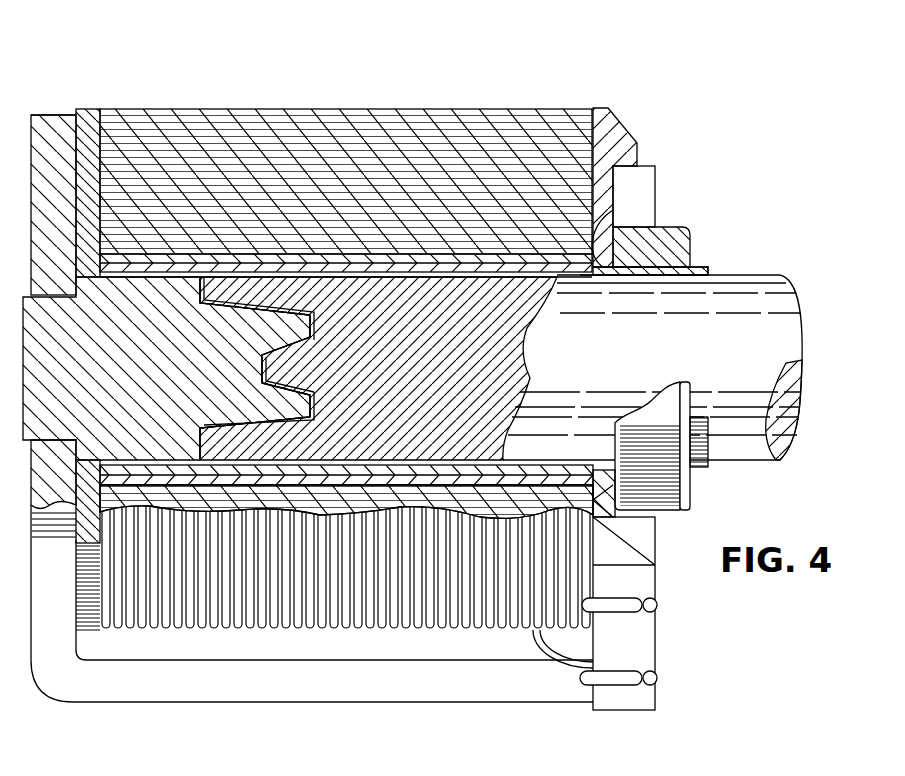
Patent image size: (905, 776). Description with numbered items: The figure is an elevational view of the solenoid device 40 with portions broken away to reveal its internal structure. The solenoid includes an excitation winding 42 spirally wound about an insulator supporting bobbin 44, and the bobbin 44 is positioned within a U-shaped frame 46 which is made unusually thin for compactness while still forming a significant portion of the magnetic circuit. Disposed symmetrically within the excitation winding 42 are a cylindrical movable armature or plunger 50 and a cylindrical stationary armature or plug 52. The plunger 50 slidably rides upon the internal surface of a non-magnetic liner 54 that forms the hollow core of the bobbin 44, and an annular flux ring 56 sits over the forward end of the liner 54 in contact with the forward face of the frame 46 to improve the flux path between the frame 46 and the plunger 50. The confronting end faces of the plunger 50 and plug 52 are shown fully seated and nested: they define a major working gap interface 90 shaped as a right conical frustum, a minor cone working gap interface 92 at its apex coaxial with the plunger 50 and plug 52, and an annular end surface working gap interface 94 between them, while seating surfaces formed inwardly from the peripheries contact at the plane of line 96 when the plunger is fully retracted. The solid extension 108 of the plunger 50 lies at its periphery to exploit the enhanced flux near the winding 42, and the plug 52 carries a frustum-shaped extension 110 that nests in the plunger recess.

The solenoid device 40 is at (535, 89).
The excitation winding 42 is at (182, 118).
The insulator supporting bobbin 44 is at (85, 113).
The U-shaped frame 46 is at (48, 118).
The movable armature or plunger 50 is at (720, 290).
The stationary armature or plug 52 is at (150, 369).
The non-magnetic liner 54 is at (615, 212).
The annular flux ring 56 is at (678, 232).
The major working gap interface 90 is at (298, 315).
The minor cone working gap interface 92 is at (305, 360).
The annular shaped end surface working gap interface 94 is at (312, 327).
The seating surface contact line 96 is at (200, 296).
The solid extension 108 is at (245, 285).
The extension of plug 110 is at (298, 300).